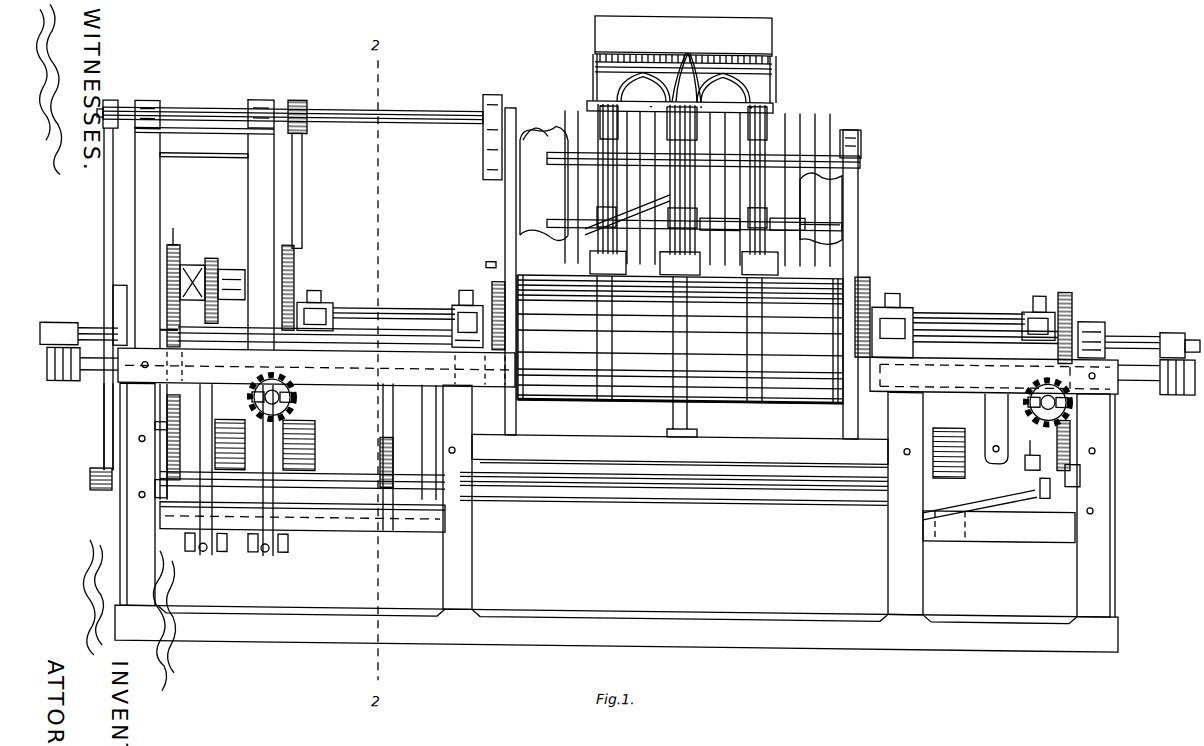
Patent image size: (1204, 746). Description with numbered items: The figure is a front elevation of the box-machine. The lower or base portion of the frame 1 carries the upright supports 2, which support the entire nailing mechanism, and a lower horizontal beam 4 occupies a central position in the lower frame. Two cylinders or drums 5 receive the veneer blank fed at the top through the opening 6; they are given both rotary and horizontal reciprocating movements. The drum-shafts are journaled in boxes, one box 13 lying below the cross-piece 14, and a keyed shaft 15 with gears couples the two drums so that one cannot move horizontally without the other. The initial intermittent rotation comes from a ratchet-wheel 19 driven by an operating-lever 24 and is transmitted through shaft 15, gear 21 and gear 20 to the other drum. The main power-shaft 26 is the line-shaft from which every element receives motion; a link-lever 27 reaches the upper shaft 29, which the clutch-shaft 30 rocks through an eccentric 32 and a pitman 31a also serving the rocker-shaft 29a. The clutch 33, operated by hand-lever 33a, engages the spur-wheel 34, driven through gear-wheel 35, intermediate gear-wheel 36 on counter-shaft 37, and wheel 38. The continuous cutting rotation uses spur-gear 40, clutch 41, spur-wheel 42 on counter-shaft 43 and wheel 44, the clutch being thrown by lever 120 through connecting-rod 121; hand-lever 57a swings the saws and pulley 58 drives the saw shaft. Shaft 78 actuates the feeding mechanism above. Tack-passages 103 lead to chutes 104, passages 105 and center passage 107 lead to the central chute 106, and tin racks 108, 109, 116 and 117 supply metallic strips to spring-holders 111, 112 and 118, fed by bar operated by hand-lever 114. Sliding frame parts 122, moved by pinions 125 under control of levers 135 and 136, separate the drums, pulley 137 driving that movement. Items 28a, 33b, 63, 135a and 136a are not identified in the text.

The base portion of the frame 1 is at (616, 516).
The upright supports 2 is at (506, 219).
The lower horizontal beam 4 is at (680, 450).
The cylinders or drums 5 is at (560, 341).
The opening 6 is at (645, 283).
The box 13 is at (1092, 327).
The cross-piece 14 is at (204, 224).
The shaft 15 is at (362, 315).
The ratchet-wheel 19 is at (113, 301).
The gear 20 is at (882, 272).
The gear 21 is at (492, 284).
The operating-lever 24 is at (118, 432).
The main power-shaft 26 is at (790, 503).
The link-lever 27 is at (104, 239).
The gear 28a is at (305, 112).
The upper shaft 29 is at (192, 114).
The rocker-shaft 29a is at (420, 127).
The clutch-shaft 30 is at (231, 266).
The pitman 31a is at (303, 177).
The eccentric 32 is at (296, 252).
The clutch 33 is at (184, 267).
The hand-lever 33a is at (227, 320).
The clutch member 33b is at (205, 297).
The spur-wheel 34 is at (171, 232).
The gear-wheel 35 is at (153, 489).
The intermediate gear-wheel 36 is at (166, 413).
The counter-shaft 37 is at (155, 430).
The wheel 38 is at (180, 340).
The spur-gear 40 is at (1080, 466).
The clutch 41 is at (1050, 493).
The spur-wheel 42 is at (1070, 425).
The counter-shaft 43 is at (1040, 448).
The wheel 44 is at (1060, 287).
The hand-lever 57a is at (428, 407).
The pulley 58 is at (948, 424).
The hopper 63 is at (595, 26).
The shaft 78 is at (817, 144).
The tack-passages 103 is at (596, 75).
The chutes 104 is at (600, 196).
The tack-passages 105 is at (668, 92).
The central chute 106 is at (700, 216).
The center passage 107 is at (690, 52).
The tin chute or rack 108 is at (590, 212).
The tin chute or rack 109 is at (648, 197).
The spring-holder 111 is at (622, 263).
The spring-holder 112 is at (705, 261).
The hand-lever 114 is at (493, 266).
The tin chute or rack 116 is at (795, 209).
The tin chute or rack 117 is at (744, 215).
The spring-holder 118 is at (765, 266).
The lever 120 is at (383, 411).
The connecting-rod 121 is at (625, 502).
The sliding frame parts 122 is at (100, 387).
The pinions 125 is at (250, 397).
The lever 135 is at (232, 365).
The lever foot 135a is at (205, 565).
The lever 136 is at (275, 366).
The lever foot 136a is at (268, 565).
The main driving-pulley 137 is at (230, 424).